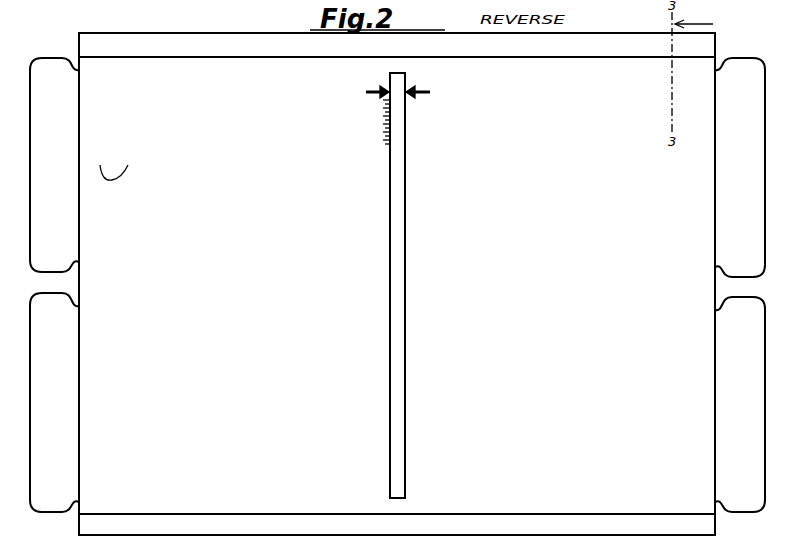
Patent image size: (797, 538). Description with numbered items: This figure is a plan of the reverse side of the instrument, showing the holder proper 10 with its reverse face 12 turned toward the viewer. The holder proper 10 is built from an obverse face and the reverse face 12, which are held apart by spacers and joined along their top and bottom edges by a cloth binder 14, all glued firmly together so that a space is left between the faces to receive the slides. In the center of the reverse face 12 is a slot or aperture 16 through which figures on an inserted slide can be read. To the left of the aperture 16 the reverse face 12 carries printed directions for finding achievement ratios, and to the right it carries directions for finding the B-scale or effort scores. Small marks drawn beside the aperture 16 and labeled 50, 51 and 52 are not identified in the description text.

The holder proper 10 is at (704, 68).
The reverse face 12 is at (613, 68).
The binder 14 is at (210, 22).
The slot or aperture 16 is at (337, 162).
The scale markings 50 is at (380, 122).
The left arrow indicator 51 is at (388, 110).
The right arrow indicator 52 is at (432, 93).